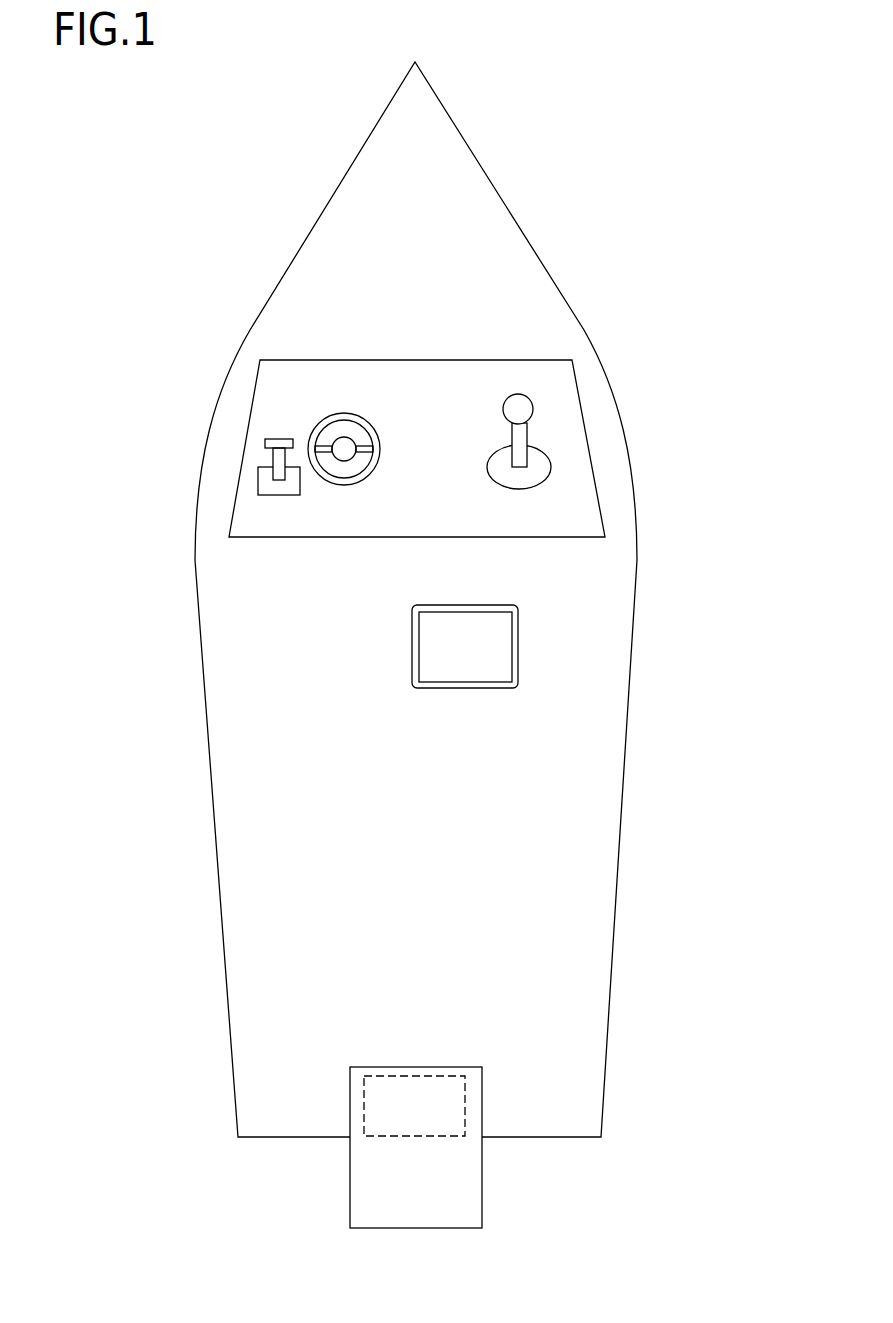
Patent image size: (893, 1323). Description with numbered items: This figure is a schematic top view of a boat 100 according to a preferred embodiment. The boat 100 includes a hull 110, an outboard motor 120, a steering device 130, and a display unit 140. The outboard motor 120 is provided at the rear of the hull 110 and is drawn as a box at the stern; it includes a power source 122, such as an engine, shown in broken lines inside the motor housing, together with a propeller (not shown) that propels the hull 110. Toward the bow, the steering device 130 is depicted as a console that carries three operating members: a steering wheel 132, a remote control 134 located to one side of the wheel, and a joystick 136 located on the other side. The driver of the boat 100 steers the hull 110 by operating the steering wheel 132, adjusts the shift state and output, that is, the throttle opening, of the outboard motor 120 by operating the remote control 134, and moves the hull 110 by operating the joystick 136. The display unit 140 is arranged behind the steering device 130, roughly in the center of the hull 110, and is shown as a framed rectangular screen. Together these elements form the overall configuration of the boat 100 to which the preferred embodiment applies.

The boat 100 is at (705, 213).
The hull 110 is at (632, 655).
The outboard motor 120 is at (350, 1197).
The power source 122 is at (380, 1076).
The steering device 130 is at (573, 372).
The steering wheel 132 is at (345, 483).
The remote control 134 is at (267, 485).
The joystick 136 is at (530, 438).
The display unit 140 is at (412, 663).